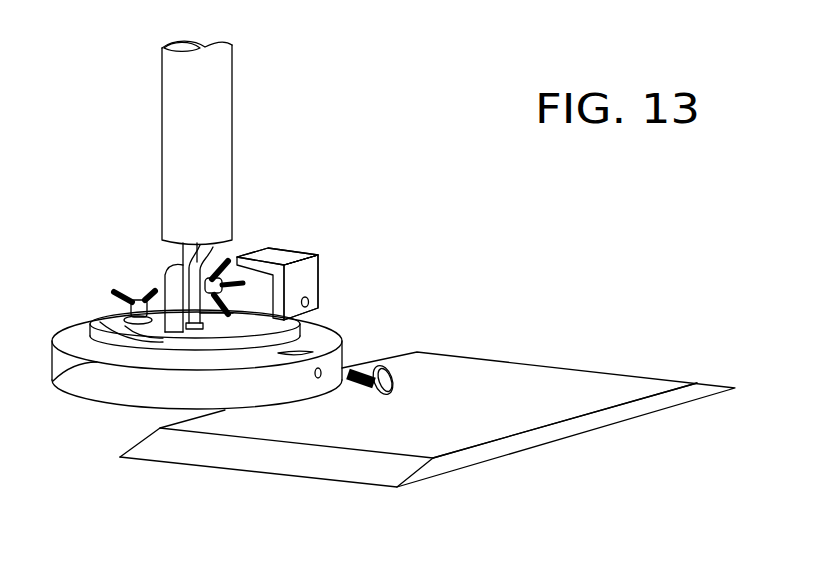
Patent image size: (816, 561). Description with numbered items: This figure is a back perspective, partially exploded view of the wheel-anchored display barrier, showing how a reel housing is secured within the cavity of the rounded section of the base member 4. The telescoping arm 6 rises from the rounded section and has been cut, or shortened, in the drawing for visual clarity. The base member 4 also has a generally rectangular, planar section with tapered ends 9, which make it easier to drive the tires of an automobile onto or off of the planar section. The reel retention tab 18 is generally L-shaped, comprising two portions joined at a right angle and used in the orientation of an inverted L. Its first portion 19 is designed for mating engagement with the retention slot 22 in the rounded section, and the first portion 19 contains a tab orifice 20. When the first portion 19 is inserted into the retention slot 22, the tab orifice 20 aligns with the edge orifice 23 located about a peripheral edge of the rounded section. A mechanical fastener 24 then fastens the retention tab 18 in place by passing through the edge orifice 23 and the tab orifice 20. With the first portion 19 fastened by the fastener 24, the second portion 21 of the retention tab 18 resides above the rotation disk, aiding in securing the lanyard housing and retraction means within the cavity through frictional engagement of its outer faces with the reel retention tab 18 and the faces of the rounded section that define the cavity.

The base member 4 is at (570, 418).
The telescoping arm 6 is at (232, 140).
The tapered ends 9 is at (350, 467).
The reel retention tab 18 is at (322, 248).
The first portion 19 is at (320, 268).
The tab orifice 20 is at (308, 301).
The second portion 21 is at (280, 258).
The retention slot 22 is at (312, 352).
The edge orifice 23 is at (318, 377).
The mechanical fastener 24 is at (393, 380).